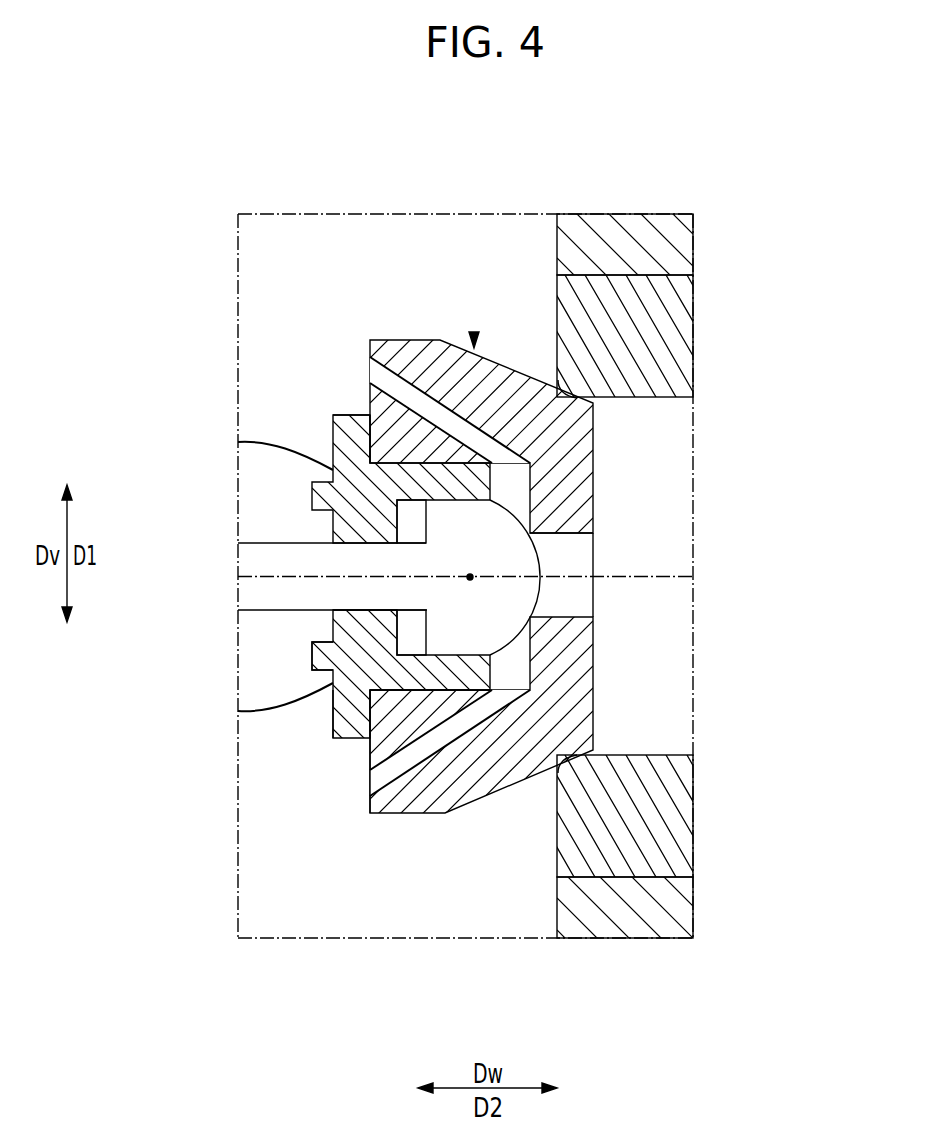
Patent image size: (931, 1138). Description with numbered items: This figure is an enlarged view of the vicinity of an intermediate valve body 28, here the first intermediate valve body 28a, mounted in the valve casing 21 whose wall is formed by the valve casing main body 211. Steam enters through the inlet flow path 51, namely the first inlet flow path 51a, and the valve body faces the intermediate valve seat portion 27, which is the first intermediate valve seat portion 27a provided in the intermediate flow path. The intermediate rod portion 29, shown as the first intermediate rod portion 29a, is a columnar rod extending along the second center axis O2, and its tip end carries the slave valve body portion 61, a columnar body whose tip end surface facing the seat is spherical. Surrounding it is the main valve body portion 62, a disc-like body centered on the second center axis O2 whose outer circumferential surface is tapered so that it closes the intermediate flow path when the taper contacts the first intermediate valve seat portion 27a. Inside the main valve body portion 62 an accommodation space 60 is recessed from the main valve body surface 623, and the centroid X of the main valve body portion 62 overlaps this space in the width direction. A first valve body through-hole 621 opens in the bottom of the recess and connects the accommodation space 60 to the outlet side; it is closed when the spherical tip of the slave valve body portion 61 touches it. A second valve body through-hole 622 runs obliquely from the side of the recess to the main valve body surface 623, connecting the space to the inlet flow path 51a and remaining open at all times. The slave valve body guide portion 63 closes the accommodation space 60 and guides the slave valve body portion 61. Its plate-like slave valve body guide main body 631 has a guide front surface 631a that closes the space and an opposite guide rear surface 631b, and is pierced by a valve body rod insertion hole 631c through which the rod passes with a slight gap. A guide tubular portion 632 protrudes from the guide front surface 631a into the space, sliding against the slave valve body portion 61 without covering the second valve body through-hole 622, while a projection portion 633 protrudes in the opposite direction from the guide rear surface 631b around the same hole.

The valve casing 21 is at (659, 582).
The valve casing main body 211 is at (618, 226).
The intermediate valve seat portion 27 is at (659, 576).
The first intermediate valve seat portion 27a is at (663, 333).
The intermediate valve body 28 is at (543, 222).
The first intermediate valve body 28a is at (476, 334).
The intermediate rod portion 29 is at (264, 537).
The first intermediate rod portion 29a is at (282, 548).
The inlet flow path 51 is at (210, 559).
The first inlet flow path 51a is at (267, 444).
The second center axis O2 is at (253, 576).
The accommodation space 60 is at (450, 578).
The slave valve body portion 61 is at (522, 596).
The main valve body portion 62 is at (563, 598).
The first valve body through-hole 621 is at (563, 533).
The second valve body through-hole 622 is at (410, 387).
The main valve body surface 623 is at (370, 757).
The slave valve body guide portion 63 is at (300, 559).
The slave valve body guide main body 631 is at (260, 559).
The guide front surface 631a is at (383, 425).
The guide rear surface 631b is at (333, 420).
The valve body rod insertion hole 631c is at (355, 610).
The guide tubular portion 632 is at (460, 673).
The projection portion 633 is at (322, 657).
The centroid X is at (470, 580).